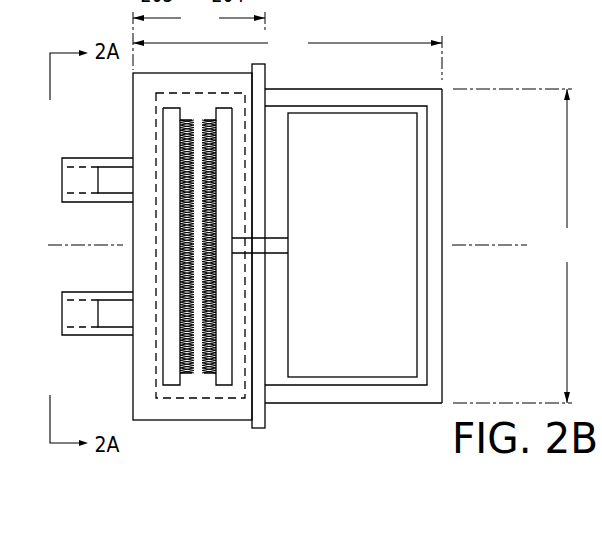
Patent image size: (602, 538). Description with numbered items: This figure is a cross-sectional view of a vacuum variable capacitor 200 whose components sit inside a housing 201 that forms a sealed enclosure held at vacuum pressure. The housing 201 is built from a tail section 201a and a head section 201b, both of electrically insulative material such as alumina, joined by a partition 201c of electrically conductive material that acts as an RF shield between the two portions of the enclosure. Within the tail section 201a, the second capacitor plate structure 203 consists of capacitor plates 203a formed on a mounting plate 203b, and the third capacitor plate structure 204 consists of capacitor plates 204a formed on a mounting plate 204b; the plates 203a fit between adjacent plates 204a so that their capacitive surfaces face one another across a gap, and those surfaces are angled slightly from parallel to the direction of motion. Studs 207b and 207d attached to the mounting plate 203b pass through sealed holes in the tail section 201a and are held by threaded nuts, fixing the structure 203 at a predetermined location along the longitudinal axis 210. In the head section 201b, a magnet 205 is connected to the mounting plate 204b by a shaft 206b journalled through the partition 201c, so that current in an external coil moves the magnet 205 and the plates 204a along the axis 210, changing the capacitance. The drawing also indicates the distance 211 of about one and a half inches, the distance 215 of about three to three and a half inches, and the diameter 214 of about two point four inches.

The vacuum variable capacitor 200 is at (451, 80).
The housing 201 is at (454, 128).
The tail section 201a is at (146, 267).
The head section 201b is at (433, 362).
The partition 201c is at (258, 112).
The second capacitor plate structure 203 is at (187, 392).
The capacitor plate 203a is at (182, 117).
The mounting plate 203b is at (173, 135).
The third capacitor plate structure 204 is at (211, 392).
The capacitor plate 204a is at (210, 118).
The mounting plate 204b is at (224, 117).
The magnet 205 is at (400, 188).
The shaft 206b is at (275, 248).
The stud 207b is at (118, 183).
The stud 207d is at (117, 320).
The longitudinal axis 210 is at (517, 245).
The distance 211 is at (199, 38).
The diameter 214 is at (518, 246).
The distance 215 is at (287, 55).